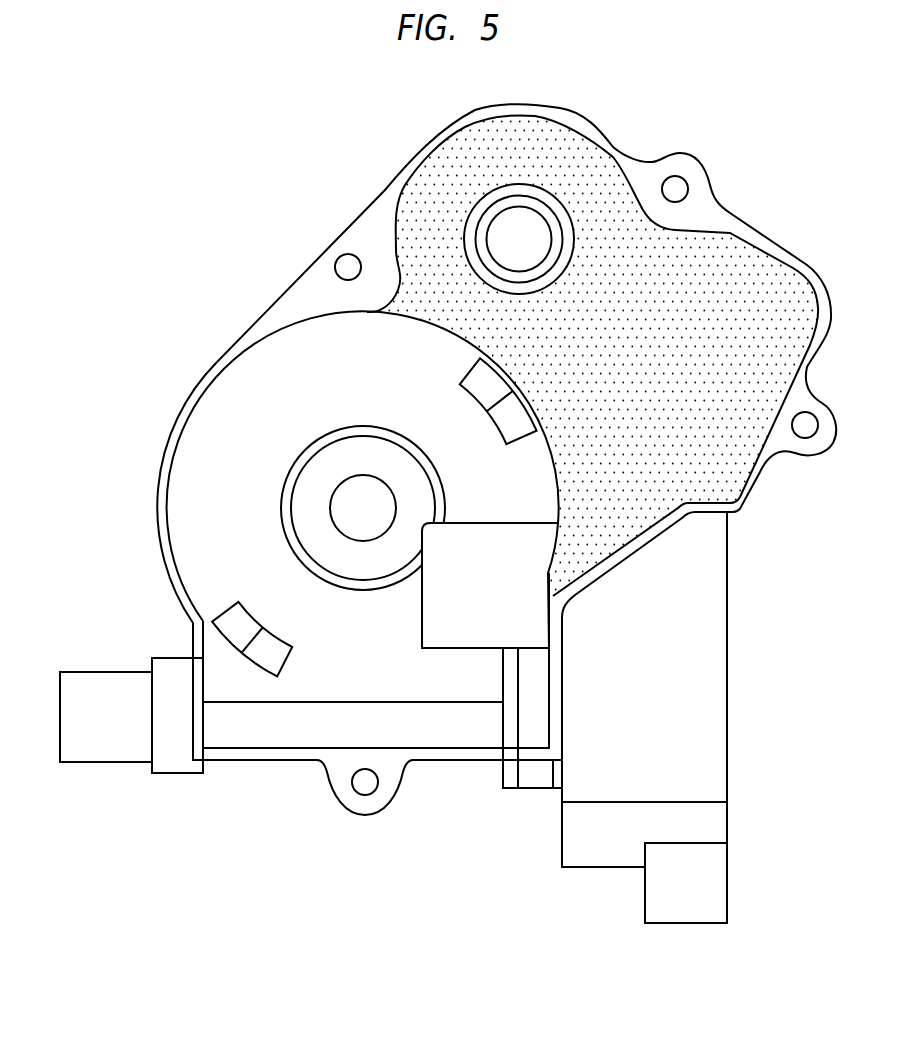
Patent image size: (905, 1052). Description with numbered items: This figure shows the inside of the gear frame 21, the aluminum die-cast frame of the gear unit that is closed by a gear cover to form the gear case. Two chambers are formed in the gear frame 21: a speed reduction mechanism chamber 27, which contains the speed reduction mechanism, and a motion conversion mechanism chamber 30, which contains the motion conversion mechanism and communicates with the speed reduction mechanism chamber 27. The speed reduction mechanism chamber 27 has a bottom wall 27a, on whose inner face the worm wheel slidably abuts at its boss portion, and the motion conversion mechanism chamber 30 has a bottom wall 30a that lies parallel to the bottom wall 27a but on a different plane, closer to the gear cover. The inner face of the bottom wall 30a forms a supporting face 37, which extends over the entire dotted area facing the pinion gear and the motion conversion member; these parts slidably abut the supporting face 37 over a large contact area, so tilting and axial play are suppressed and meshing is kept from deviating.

The gear frame 21 is at (264, 780).
The speed reduction mechanism chamber 27 is at (167, 522).
The bottom wall of the speed reduction mechanism chamber 27a is at (238, 398).
The motion conversion mechanism chamber 30 is at (786, 268).
The bottom wall of the motion conversion mechanism chamber 30a is at (613, 262).
The supporting face 37 is at (688, 337).